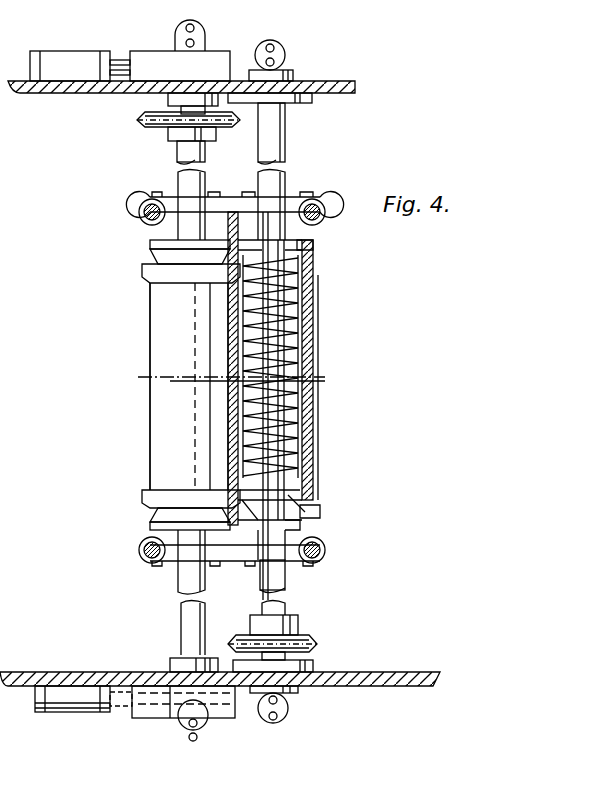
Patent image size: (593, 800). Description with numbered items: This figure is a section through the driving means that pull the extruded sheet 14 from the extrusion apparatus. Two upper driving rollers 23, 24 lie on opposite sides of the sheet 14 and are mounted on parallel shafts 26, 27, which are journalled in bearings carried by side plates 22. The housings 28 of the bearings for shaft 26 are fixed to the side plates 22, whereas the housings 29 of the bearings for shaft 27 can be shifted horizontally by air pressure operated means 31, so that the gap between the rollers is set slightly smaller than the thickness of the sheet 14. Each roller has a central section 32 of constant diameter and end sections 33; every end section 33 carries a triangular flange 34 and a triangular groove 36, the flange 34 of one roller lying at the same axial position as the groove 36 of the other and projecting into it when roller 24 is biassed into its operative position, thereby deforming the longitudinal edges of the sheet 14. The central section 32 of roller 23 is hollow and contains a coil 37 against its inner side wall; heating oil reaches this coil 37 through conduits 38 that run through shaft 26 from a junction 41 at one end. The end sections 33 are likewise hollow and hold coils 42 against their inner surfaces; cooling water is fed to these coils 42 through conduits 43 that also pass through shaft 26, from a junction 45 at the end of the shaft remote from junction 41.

The sheet 14 is at (235, 322).
The side plates 22 is at (47, 95).
The upper driving roller 23 is at (312, 400).
The upper driving roller 24 is at (165, 405).
The shaft 26 is at (285, 607).
The shaft 27 is at (180, 590).
The housings 28 is at (285, 668).
The housings 29 is at (172, 668).
The air pressure operated means 31 is at (70, 700).
The central section 32 is at (160, 295).
The end sections 33 is at (145, 515).
The flange 34 is at (320, 512).
The groove 36 is at (305, 493).
The coil 37 is at (306, 340).
The conduits 38 is at (300, 522).
The junction 41 is at (288, 712).
The coils 42 is at (243, 543).
The conduits 43 is at (264, 70).
The junction 45 is at (284, 50).